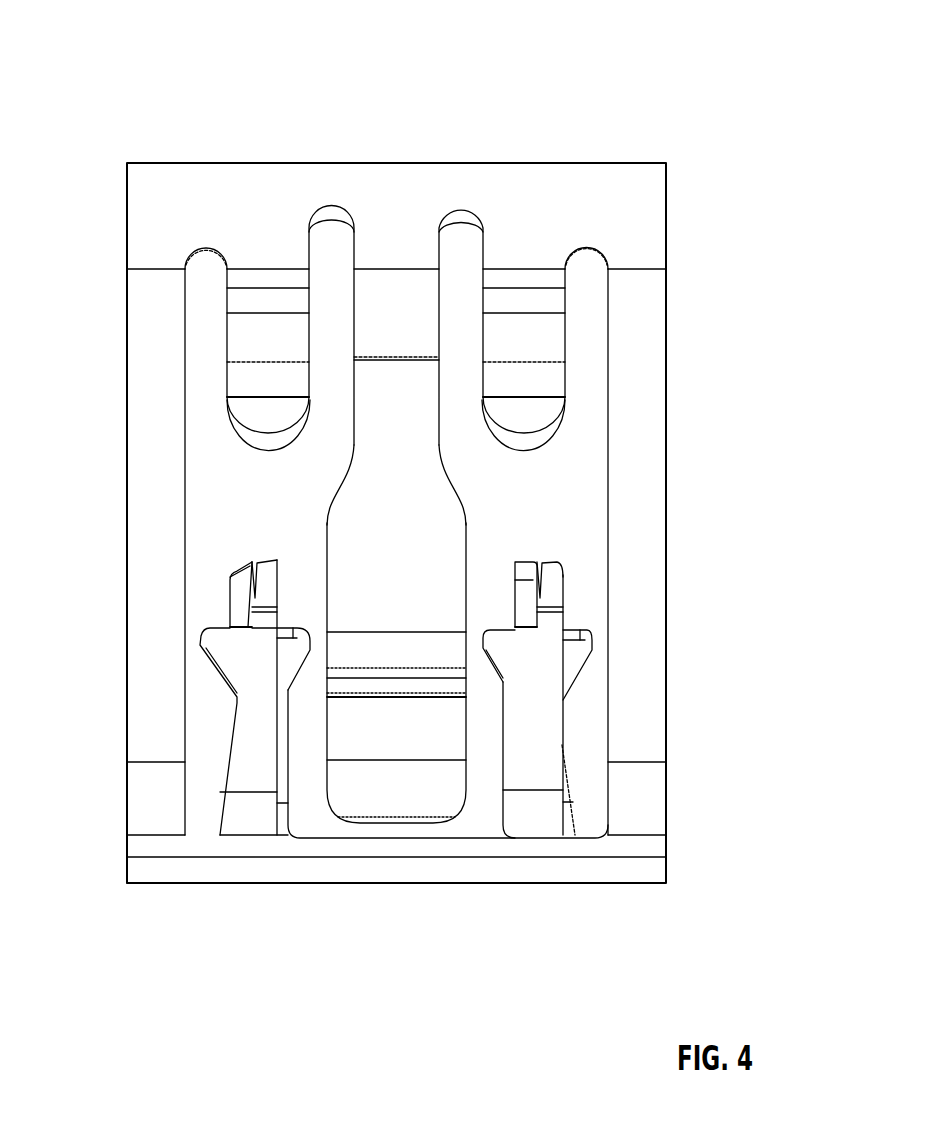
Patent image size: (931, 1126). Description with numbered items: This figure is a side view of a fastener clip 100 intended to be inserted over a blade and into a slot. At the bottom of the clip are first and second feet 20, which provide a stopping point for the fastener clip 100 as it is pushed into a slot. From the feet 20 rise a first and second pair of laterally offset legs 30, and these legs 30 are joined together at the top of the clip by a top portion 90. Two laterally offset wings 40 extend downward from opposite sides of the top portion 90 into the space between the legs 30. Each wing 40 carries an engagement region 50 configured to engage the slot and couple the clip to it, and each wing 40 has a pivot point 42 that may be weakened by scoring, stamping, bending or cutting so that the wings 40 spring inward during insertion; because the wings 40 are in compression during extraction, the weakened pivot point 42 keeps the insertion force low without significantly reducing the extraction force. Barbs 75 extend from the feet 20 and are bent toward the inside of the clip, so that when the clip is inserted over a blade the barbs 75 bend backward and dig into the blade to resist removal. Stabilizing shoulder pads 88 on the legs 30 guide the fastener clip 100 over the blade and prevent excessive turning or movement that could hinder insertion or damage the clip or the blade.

The fastener clip 100 is at (711, 77).
The first and second feet 20 is at (653, 865).
The first and second pair of laterally offset legs 30 is at (153, 462).
The wings 40 is at (430, 462).
The pivot point 42 is at (405, 268).
The engagement region 50 is at (440, 688).
The barbs 75 is at (237, 597).
The stabilizing shoulder pads 88 is at (250, 380).
The top portion 90 is at (420, 187).